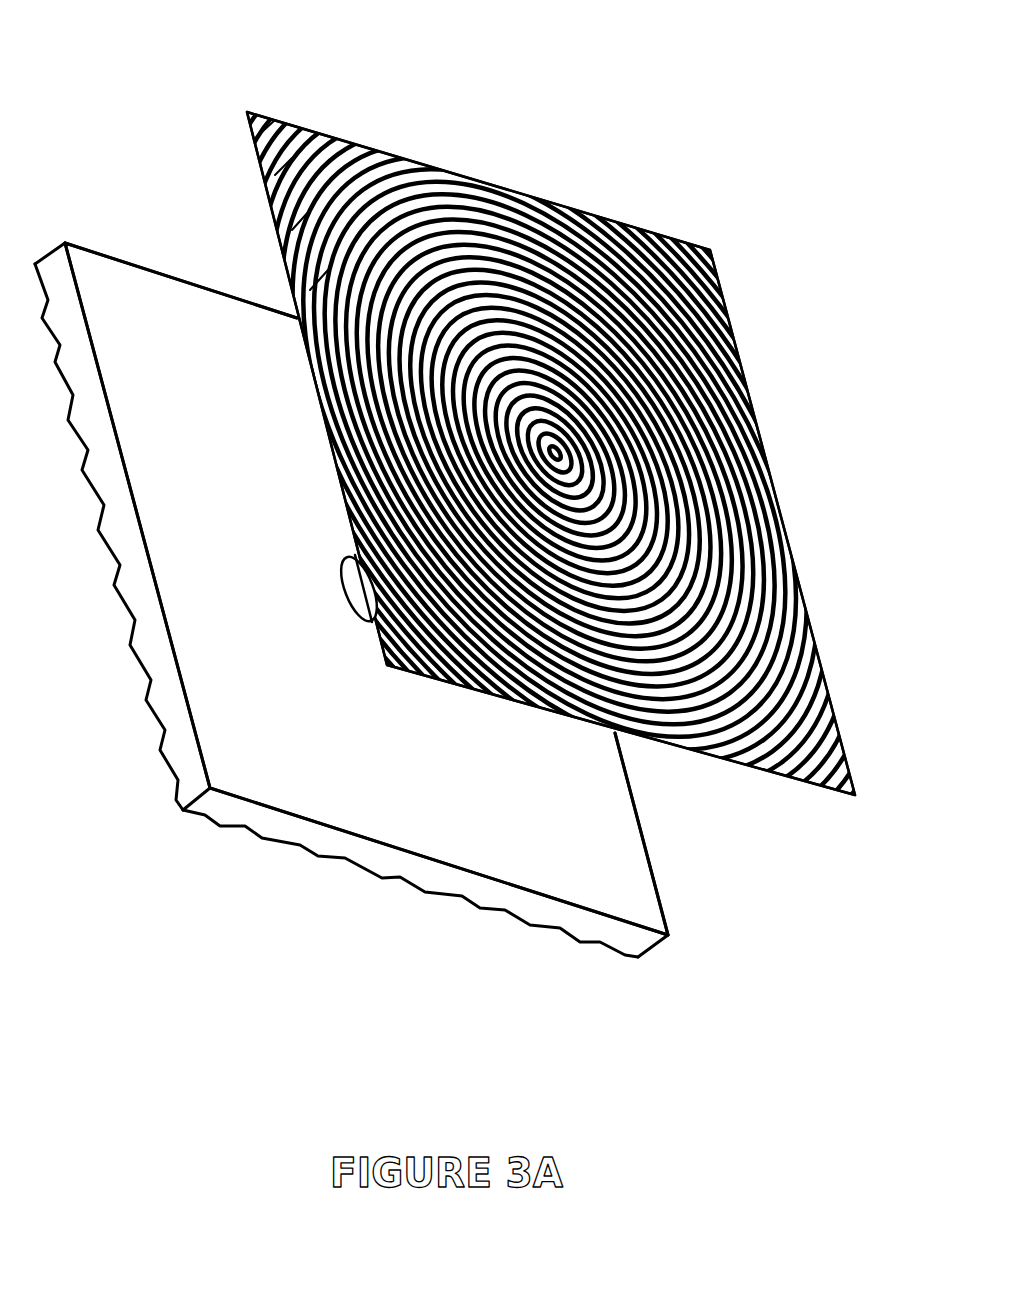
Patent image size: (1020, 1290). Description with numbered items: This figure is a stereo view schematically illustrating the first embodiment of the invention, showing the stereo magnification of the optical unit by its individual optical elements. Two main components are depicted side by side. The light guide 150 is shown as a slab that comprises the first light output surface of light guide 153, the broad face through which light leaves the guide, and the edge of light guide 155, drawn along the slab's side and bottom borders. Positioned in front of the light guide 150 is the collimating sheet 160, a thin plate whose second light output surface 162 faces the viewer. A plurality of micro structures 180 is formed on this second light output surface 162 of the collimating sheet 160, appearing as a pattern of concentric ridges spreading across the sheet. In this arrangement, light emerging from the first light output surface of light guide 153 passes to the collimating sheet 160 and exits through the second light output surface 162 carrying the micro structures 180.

The light guide 150 is at (377, 897).
The first light output surface of light guide 153 is at (610, 823).
The edge of light guide 155 is at (172, 715).
The collimating sheet 160 is at (543, 493).
The second light output surface 162 is at (567, 233).
The micro structures 180 is at (337, 127).